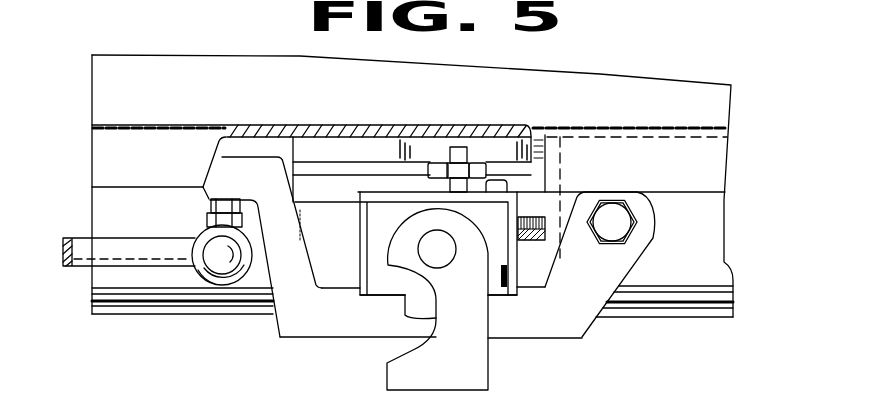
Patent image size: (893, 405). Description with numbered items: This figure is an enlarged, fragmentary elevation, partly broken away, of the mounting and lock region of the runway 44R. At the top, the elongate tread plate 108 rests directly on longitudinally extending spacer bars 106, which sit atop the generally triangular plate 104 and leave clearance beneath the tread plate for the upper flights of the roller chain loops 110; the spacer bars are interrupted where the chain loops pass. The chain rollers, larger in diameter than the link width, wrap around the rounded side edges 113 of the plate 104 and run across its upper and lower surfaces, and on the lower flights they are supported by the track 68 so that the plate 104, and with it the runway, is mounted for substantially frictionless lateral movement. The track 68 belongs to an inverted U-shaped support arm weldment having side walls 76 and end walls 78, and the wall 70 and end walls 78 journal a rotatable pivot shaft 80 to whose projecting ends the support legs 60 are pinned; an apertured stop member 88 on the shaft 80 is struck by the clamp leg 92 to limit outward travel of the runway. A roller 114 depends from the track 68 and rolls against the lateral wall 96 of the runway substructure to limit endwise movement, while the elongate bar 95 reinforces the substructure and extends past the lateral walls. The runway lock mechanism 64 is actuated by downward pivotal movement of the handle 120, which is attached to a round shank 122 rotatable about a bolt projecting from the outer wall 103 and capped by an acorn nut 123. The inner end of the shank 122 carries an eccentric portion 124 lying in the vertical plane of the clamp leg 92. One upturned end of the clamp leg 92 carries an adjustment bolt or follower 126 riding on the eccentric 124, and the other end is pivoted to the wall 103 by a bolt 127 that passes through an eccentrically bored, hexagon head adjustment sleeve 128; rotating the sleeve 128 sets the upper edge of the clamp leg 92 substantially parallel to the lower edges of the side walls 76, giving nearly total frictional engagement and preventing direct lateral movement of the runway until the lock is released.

The runway 44R is at (716, 126).
The tread plate 108 is at (252, 125).
The spacer bars 106 is at (321, 146).
The rounded side edges 113 is at (438, 158).
The roller chain loops 110 is at (461, 157).
The triangular plate 104 is at (524, 165).
The track 68 is at (509, 193).
The lateral wall 96 is at (567, 191).
The bolt 127 is at (628, 223).
The hexagon head adjustment sleeve 128 is at (641, 238).
The outer wall 103 is at (111, 300).
The elongate bar 95 is at (165, 308).
The runway lock mechanism 64 is at (594, 334).
The support legs 60 is at (387, 381).
The stop member 88 is at (430, 309).
The pivot shaft 80 is at (445, 256).
The end walls 78 is at (385, 295).
The side walls 76 is at (360, 254).
The wall 70 is at (317, 231).
The clamp leg 92 is at (282, 338).
The round shank 122 is at (218, 287).
The eccentric portion 124 is at (200, 275).
The acorn nut 123 is at (214, 245).
The adjustment bolt or follower 126 is at (208, 212).
The handle 120 is at (66, 265).
The roller 114 is at (531, 256).